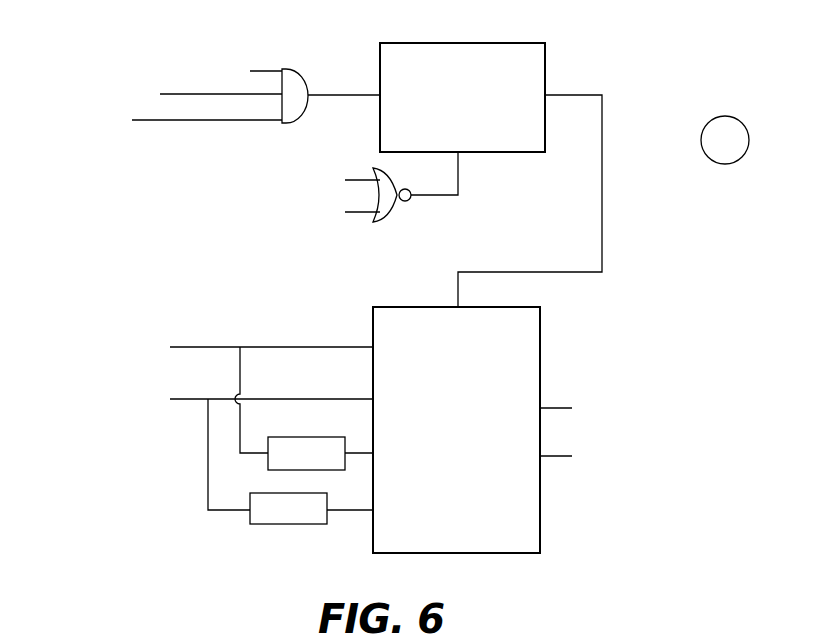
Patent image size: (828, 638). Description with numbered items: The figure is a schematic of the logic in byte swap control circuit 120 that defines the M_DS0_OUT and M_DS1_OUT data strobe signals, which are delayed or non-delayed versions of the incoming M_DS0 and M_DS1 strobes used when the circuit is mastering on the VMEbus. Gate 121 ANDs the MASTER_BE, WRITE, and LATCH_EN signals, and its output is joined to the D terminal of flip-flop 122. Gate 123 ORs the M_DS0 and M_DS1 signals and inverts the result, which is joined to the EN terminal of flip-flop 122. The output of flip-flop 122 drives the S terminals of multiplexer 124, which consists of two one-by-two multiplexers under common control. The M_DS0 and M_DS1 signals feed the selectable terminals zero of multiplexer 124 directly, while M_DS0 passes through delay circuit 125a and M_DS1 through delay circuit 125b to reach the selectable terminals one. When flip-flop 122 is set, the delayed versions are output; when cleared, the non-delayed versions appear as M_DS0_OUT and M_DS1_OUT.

The byte swap control circuit 120 is at (392, 281).
The gate 121 is at (288, 69).
The flip-flop 122 is at (420, 43).
The gate 123 is at (390, 215).
The multiplexer 124 is at (540, 334).
The delay circuit 125a is at (325, 437).
The delay circuit 125b is at (310, 524).